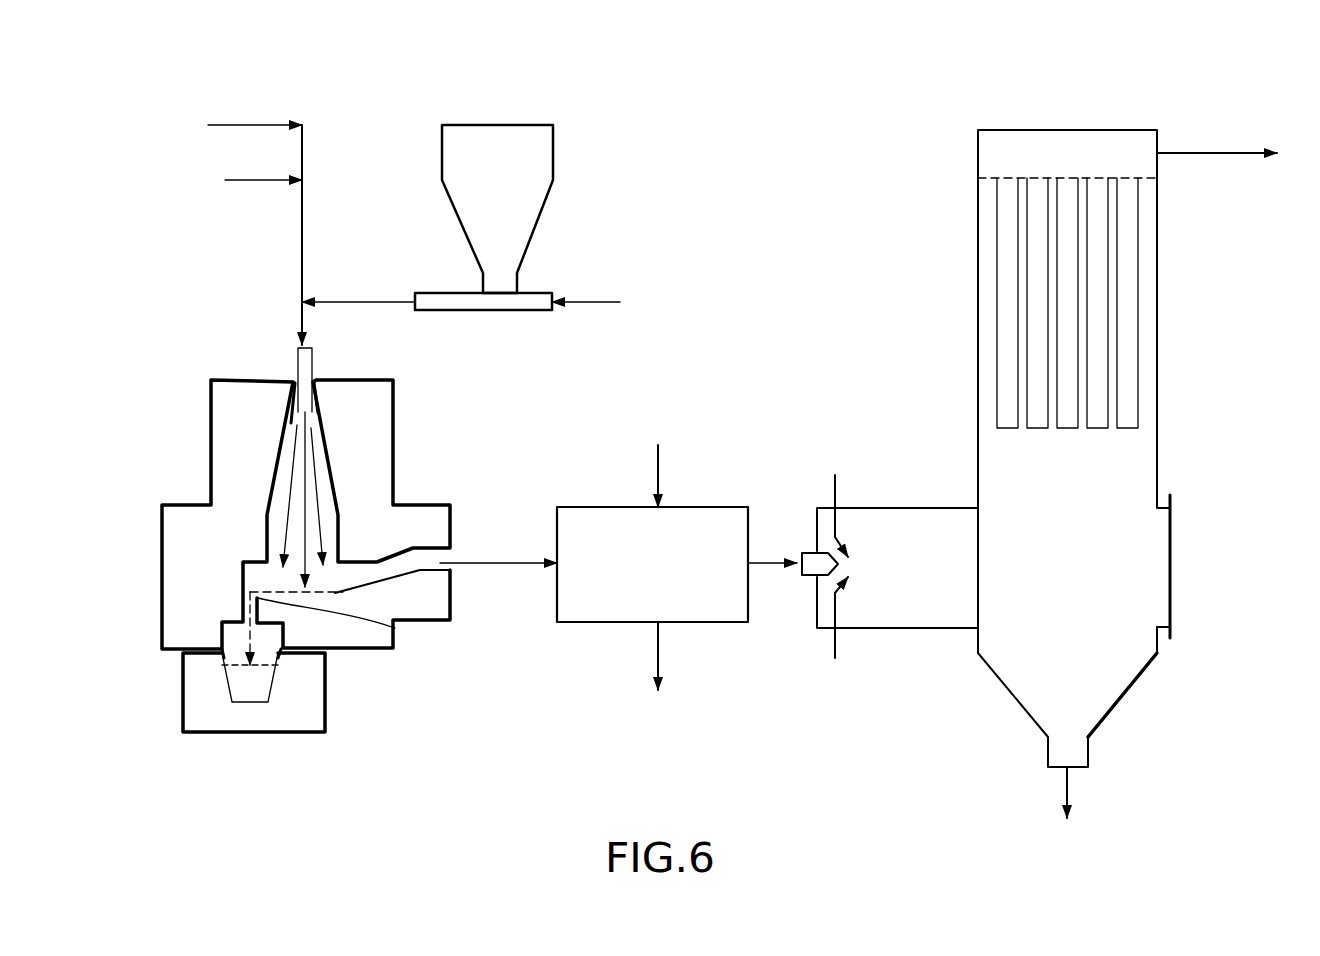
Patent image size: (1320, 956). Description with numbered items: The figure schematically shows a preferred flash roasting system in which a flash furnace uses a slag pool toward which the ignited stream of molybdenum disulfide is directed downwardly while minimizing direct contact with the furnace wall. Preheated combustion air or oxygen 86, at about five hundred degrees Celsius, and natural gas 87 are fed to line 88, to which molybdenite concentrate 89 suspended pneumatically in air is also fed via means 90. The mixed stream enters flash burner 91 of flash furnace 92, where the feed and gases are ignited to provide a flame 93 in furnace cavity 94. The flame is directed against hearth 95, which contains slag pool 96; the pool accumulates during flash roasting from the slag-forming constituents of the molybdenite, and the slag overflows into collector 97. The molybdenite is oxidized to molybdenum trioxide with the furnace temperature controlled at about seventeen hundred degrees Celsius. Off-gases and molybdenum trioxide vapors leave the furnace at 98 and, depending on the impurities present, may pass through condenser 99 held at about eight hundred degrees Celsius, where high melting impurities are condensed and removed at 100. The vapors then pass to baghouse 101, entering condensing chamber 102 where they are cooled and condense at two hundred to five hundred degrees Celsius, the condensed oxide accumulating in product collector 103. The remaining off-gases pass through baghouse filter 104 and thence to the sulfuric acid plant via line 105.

The preheated combustion air or oxygen 86 is at (262, 123).
The natural gas 87 is at (245, 186).
The line 88 is at (302, 258).
The molybdenite concentrate 89 is at (511, 238).
The pneumatic conveying means 90 is at (600, 302).
The flash burner 91 is at (316, 358).
The flash furnace 92 is at (212, 453).
The flame 93 is at (310, 440).
The furnace cavity 94 is at (323, 498).
The hearth 95 is at (320, 605).
The slag pool 96 is at (393, 630).
The collector 97 is at (372, 722).
The furnace off-gas outlet 98 is at (447, 556).
The condenser 99 is at (620, 623).
The impurity removal outlet 100 is at (660, 661).
The baghouse 101 is at (978, 328).
The condensing chamber 102 is at (900, 630).
The product collector 103 is at (1122, 692).
The baghouse filter 104 is at (1132, 314).
The line to sulfuric acid plant 105 is at (1160, 153).